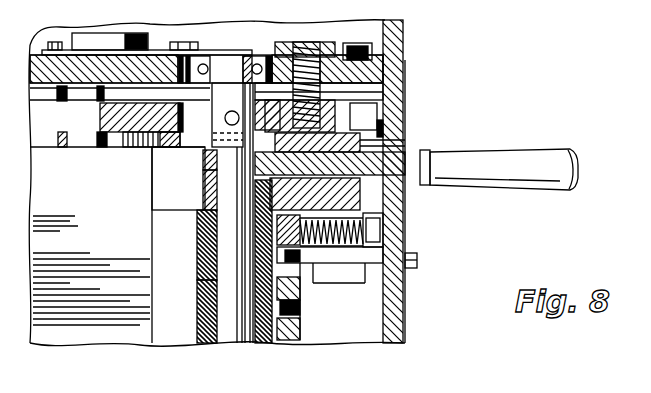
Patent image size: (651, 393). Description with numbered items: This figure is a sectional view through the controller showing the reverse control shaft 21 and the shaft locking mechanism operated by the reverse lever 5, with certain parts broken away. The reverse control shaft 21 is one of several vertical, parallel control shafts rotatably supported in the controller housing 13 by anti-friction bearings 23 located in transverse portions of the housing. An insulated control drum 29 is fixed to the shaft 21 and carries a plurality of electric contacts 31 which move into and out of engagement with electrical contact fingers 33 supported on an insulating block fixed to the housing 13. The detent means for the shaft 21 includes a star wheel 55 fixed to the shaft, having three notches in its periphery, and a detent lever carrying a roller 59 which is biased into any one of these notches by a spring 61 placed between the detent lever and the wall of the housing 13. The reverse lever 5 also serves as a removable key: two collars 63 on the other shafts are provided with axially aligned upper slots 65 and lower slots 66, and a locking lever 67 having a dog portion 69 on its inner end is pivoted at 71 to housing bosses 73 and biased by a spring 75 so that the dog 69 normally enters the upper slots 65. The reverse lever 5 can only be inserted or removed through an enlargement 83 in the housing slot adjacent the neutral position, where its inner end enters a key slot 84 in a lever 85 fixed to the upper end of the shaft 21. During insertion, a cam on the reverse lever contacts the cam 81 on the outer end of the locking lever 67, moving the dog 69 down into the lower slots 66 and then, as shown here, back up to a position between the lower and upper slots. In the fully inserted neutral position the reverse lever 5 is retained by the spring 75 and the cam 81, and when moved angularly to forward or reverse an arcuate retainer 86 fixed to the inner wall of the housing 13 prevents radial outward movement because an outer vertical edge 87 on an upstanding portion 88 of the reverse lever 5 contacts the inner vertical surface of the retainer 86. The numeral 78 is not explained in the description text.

The reverse lever 5 is at (515, 160).
The controller housing 13 is at (407, 250).
The reverse control shaft 21 is at (245, 343).
The anti-friction bearings 23 is at (212, 62).
The control drum 29 is at (200, 345).
The electric contacts 31 is at (330, 318).
The contact fingers 33 is at (302, 288).
The star wheel 55 is at (197, 242).
The roller 59 is at (255, 218).
The spring 61 is at (325, 248).
The collars 63 is at (85, 148).
The upper slots 65 is at (42, 96).
The lower slots 66 is at (104, 148).
The locking lever 67 is at (207, 146).
The dog portion 69 is at (98, 118).
The pivot 71 is at (227, 115).
The housing bosses 73 is at (205, 155).
The spring 75 is at (310, 43).
The shaft 78 is at (254, 155).
The cam 81 is at (318, 122).
The enlargement 83 is at (431, 163).
The key slot 84 is at (205, 172).
The lever 85 is at (385, 224).
The arcuate retainer 86 is at (378, 118).
The outer vertical edge 87 is at (385, 148).
The upstanding portion 88 is at (380, 133).